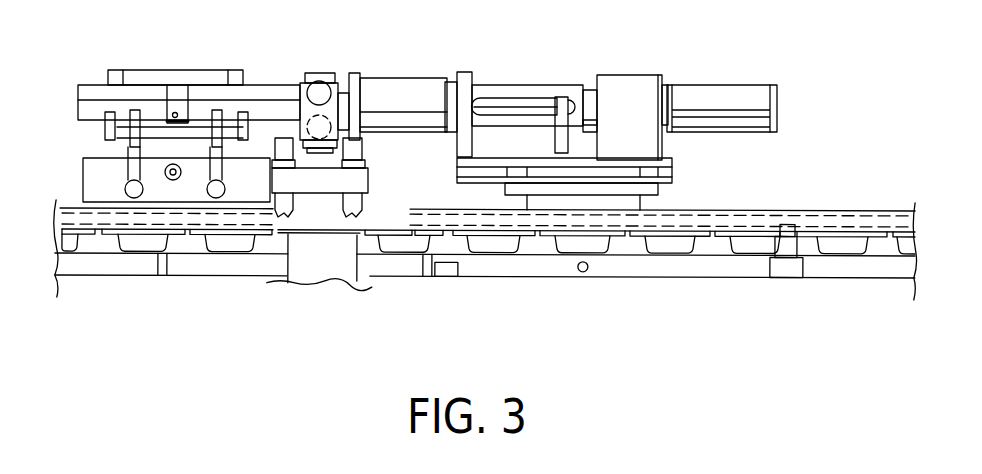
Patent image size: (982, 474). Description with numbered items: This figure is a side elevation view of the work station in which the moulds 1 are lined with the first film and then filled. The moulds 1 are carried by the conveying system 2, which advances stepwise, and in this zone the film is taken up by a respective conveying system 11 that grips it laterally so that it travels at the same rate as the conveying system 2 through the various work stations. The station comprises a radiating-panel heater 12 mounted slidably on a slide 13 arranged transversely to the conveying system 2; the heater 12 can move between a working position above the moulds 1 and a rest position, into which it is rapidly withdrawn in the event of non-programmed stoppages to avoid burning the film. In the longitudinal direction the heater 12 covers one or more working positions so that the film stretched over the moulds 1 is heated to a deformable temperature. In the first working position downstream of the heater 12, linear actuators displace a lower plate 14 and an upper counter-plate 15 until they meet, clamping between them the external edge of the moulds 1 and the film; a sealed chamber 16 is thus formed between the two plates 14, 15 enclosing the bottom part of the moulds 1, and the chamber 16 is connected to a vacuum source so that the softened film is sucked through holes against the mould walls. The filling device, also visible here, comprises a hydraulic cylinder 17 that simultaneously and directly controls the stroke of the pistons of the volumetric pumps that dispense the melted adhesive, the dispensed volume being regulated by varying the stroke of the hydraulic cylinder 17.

The moulds 1 is at (488, 245).
The conveying system 2 is at (100, 258).
The conveying system 11 is at (836, 196).
The radiating-panel heater 12 is at (236, 185).
The slide 13 is at (90, 92).
The lower plate 14 is at (332, 268).
The upper counter-plate 15 is at (317, 207).
The sealed chamber 16 is at (363, 205).
The hydraulic cylinder 17 is at (722, 97).